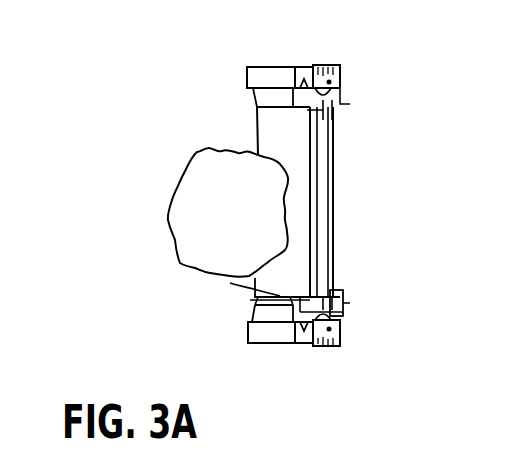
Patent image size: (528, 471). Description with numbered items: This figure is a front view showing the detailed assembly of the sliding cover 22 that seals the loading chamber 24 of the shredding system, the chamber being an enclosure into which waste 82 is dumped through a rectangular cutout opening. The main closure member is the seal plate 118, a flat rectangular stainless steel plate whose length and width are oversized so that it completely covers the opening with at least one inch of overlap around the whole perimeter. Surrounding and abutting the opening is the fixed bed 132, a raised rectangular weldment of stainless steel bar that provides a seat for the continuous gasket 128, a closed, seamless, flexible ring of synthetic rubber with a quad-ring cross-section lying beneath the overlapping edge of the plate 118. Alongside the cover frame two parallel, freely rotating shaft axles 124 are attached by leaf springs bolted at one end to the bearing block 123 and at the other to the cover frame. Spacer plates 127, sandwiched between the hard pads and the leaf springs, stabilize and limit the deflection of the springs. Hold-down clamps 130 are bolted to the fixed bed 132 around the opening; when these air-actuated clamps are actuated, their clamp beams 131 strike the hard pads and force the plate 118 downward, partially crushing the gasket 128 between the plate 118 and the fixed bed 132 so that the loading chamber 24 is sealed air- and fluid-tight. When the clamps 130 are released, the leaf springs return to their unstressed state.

The sliding cover 22 is at (333, 182).
The loading chamber 24 is at (272, 130).
The waste 82 is at (208, 182).
The seal plate 118 is at (315, 230).
The bearing block 123 is at (343, 298).
The shaft axles 124 is at (343, 312).
The spacer plates 127 is at (343, 304).
The continuous gasket 128 is at (257, 310).
The hold-down clamps 130 is at (325, 346).
The clamp beams 131 is at (350, 104).
The fixed bed 132 is at (230, 283).